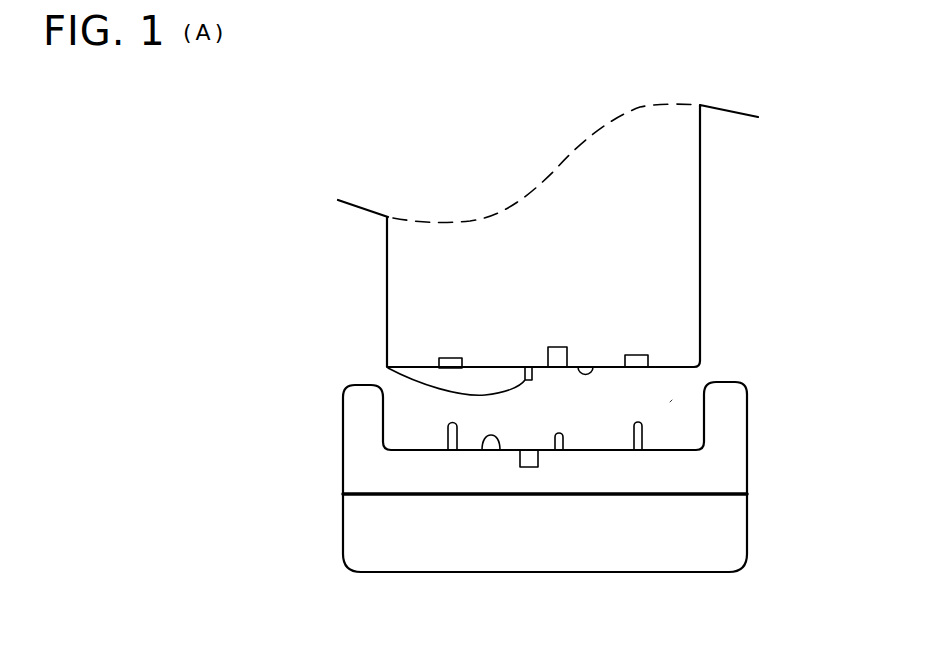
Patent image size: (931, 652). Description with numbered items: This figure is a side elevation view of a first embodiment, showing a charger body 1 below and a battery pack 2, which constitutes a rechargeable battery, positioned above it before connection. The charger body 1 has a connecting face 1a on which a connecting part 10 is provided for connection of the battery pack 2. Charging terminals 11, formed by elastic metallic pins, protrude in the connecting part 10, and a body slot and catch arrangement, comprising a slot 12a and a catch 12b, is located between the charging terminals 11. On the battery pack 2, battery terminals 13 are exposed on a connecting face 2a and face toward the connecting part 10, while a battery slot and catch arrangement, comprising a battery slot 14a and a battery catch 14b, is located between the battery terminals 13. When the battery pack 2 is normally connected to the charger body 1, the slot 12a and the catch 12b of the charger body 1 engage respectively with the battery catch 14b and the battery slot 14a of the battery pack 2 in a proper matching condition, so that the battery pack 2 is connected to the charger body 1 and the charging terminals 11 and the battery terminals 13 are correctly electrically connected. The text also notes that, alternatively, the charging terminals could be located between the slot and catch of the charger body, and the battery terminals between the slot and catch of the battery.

The charger body 1 is at (749, 464).
The connecting face 1a is at (483, 447).
The battery pack 2 is at (702, 211).
The connecting face 2a is at (590, 367).
The connecting part 10 is at (670, 402).
The charging terminals 11 is at (448, 430).
The slot 12a is at (521, 468).
The catch 12b is at (589, 420).
The battery terminals 13 is at (447, 357).
The battery slot 14a is at (557, 347).
The battery catch 14b is at (392, 372).